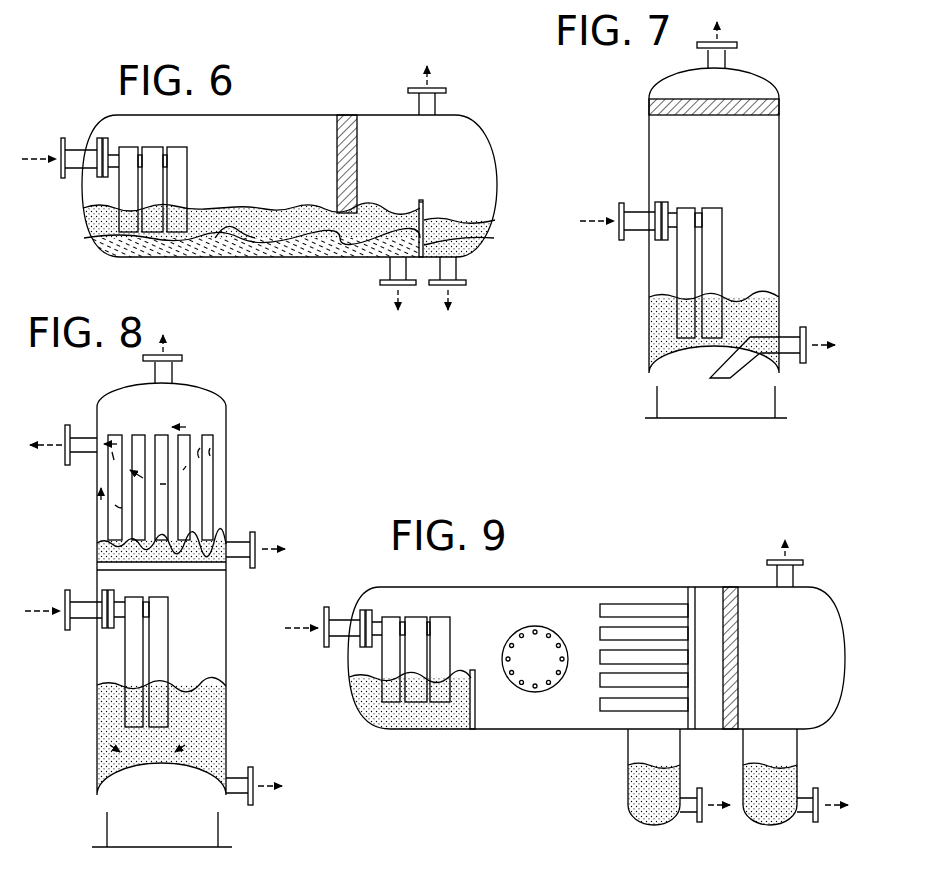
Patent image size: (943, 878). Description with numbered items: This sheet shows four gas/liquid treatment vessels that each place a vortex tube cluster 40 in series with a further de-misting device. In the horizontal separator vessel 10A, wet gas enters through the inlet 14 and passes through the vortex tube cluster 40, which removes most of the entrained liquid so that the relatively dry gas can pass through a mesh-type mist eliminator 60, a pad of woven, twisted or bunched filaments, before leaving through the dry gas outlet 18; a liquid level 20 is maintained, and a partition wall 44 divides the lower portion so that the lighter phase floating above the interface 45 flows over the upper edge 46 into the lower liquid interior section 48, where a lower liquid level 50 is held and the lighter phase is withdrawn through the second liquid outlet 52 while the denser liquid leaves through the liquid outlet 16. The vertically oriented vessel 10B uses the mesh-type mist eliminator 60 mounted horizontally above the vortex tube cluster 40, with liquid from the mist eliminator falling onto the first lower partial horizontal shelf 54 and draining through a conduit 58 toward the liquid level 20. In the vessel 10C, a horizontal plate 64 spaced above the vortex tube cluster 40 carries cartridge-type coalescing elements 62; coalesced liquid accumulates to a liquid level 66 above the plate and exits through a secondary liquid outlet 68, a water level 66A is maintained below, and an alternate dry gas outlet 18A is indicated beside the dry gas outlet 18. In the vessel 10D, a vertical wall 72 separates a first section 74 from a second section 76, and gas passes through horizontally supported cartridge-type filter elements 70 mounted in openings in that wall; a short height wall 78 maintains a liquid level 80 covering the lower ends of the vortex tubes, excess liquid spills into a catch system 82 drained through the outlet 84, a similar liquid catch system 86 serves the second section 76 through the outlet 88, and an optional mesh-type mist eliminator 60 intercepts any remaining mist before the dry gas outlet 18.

In FIG. 6, the horizontal separator vessel 10A is at (238, 114).
In FIG. 7, the vertically oriented vessel 10B is at (781, 135).
In FIG. 8, the vessel 10C is at (228, 426).
In FIG. 9, the vessel 10D is at (534, 586).
In FIG. 6, the inlet 14 is at (60, 150).
In FIG. 7, the inlet 14 is at (618, 212).
In FIG. 8, the inlet 14 is at (80, 620).
In FIG. 9, the inlet 14 is at (334, 607).
In FIG. 6, the liquid outlet 16 is at (388, 294).
In FIG. 7, the liquid outlet 16 is at (800, 362).
In FIG. 8, the liquid outlet 16 is at (240, 770).
In FIG. 6, the dry gas outlet 18 is at (432, 90).
In FIG. 7, the dry gas outlet 18 is at (722, 45).
In FIG. 8, the dry gas outlet 18 is at (173, 358).
In FIG. 9, the dry gas outlet 18 is at (790, 561).
In FIG. 8, the alternate dry gas outlet 18A is at (80, 455).
In FIG. 6, the liquid level 20 is at (228, 200).
In FIG. 7, the liquid level 20 is at (666, 296).
In FIG. 6, the vortex tube cluster 40 is at (212, 163).
In FIG. 7, the vortex tube cluster 40 is at (744, 235).
In FIG. 8, the vortex tube cluster 40 is at (180, 612).
In FIG. 9, the vortex tube cluster 40 is at (465, 632).
In FIG. 6, the partition wall 44 is at (418, 232).
In FIG. 6, the interface 45 is at (222, 230).
In FIG. 6, the upper edge 46 is at (425, 208).
In FIG. 6, the lower liquid interior section 48 is at (463, 238).
In FIG. 6, the lower liquid level 50 is at (458, 216).
In FIG. 6, the second liquid outlet 52 is at (456, 268).
In FIG. 7, the first lower partial horizontal shelf 54 is at (745, 178).
In FIG. 7, the conduit 58 is at (773, 272).
In FIG. 6, the mesh-type mist eliminator 60 is at (351, 138).
In FIG. 7, the mesh-type mist eliminator 60 is at (697, 99).
In FIG. 9, the mesh-type mist eliminator 60 is at (740, 688).
In FIG. 8, the cartridge-type coalescing elements 62 is at (208, 494).
In FIG. 8, the horizontal plate 64 is at (117, 567).
In FIG. 8, the liquid level 66 is at (198, 540).
In FIG. 8, the water level 66A is at (98, 675).
In FIG. 8, the secondary liquid outlet 68 is at (253, 532).
In FIG. 9, the cartridge-type filter elements 70 is at (620, 632).
In FIG. 9, the vertical wall 72 is at (698, 600).
In FIG. 9, the first section 74 is at (570, 720).
In FIG. 9, the second section 76 is at (806, 646).
In FIG. 9, the short height wall 78 is at (478, 702).
In FIG. 9, the liquid level 80 is at (358, 677).
In FIG. 9, the catch system 82 is at (627, 755).
In FIG. 9, the outlet 84 is at (700, 795).
In FIG. 9, the liquid catch system 86 is at (798, 762).
In FIG. 9, the outlet 88 is at (812, 821).